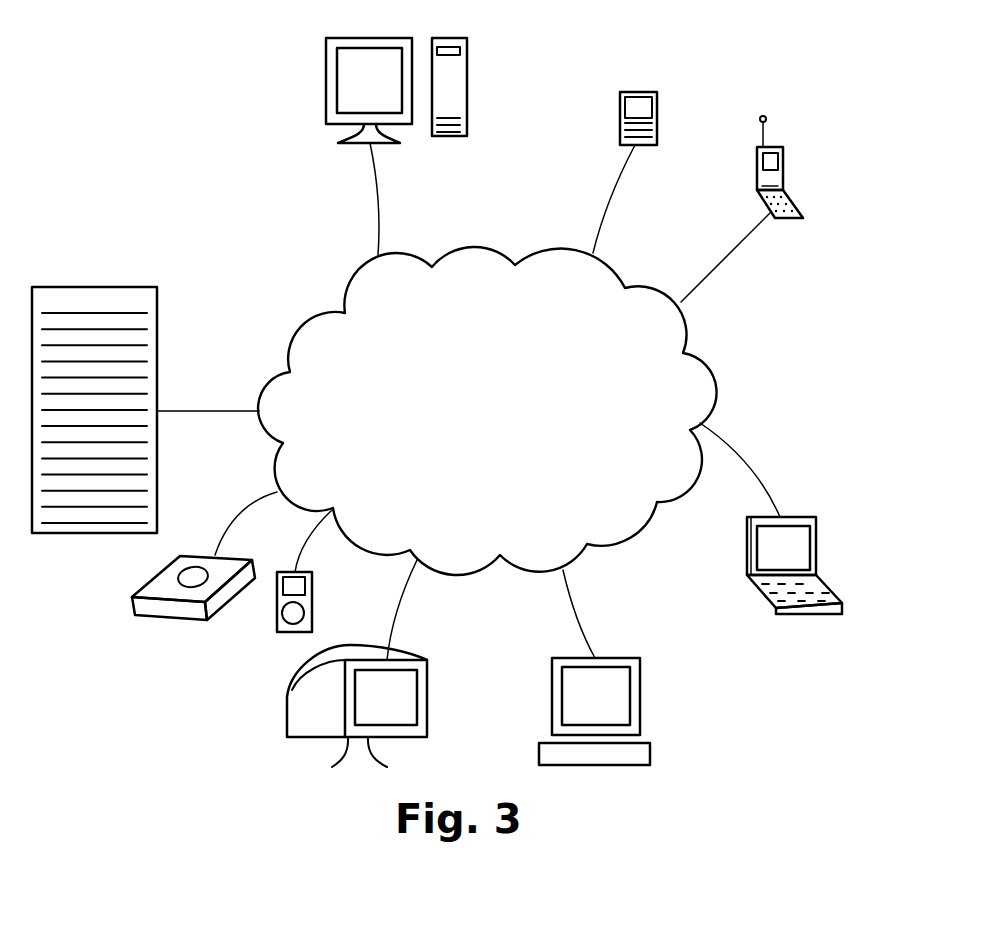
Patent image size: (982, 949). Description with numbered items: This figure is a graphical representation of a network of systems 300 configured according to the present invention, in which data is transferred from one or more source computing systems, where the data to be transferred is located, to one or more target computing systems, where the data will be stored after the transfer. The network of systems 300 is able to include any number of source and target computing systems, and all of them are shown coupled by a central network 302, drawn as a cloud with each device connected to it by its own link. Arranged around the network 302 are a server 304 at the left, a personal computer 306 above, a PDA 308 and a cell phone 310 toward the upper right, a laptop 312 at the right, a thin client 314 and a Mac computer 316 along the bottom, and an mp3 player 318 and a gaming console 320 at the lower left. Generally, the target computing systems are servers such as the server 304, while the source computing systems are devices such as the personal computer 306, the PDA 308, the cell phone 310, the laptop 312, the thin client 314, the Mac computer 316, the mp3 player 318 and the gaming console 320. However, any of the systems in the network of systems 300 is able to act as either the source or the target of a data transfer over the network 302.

The network of systems 300 is at (168, 79).
The network 302 is at (298, 325).
The server 304 is at (104, 286).
The personal computer 306 is at (467, 82).
The PDA 308 is at (657, 112).
The cell phone 310 is at (783, 166).
The laptop 312 is at (816, 538).
The thin client 314 is at (640, 692).
The Mac computer 316 is at (427, 693).
The mp3 player 318 is at (277, 623).
The gaming console 320 is at (168, 622).